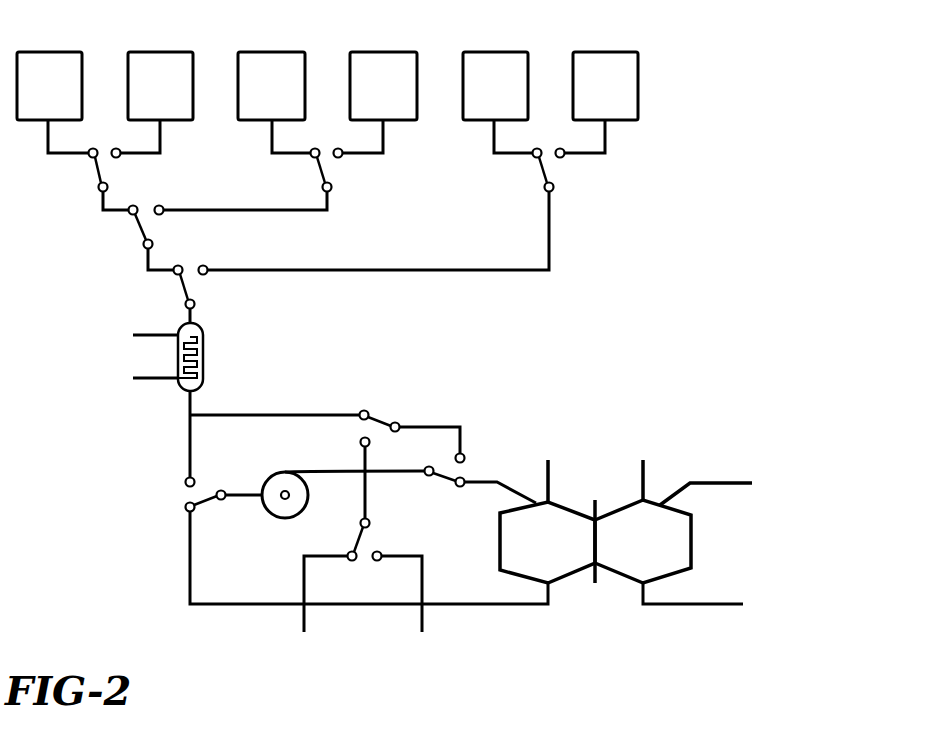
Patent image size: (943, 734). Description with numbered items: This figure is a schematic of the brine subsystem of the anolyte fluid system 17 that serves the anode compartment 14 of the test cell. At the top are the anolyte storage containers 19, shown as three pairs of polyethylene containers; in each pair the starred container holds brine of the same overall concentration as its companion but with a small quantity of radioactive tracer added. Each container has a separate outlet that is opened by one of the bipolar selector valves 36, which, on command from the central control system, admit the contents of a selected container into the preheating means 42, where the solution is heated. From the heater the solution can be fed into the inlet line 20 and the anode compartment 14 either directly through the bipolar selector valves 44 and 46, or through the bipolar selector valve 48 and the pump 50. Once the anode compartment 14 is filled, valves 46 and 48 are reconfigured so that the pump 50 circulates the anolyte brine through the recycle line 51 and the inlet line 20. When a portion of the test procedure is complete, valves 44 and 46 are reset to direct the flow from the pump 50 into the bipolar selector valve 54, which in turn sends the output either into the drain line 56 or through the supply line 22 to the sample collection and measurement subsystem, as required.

The anolyte storage containers 19 is at (160, 52).
The anolyte fluid system 17 is at (447, 46).
The bipolar selector valves 36 is at (98, 173).
The preheating means 42 is at (205, 333).
The bipolar selector valve 44 is at (380, 417).
The bipolar selector valve 46 is at (455, 470).
The bipolar selector valve 48 is at (185, 493).
The pump 50 is at (285, 472).
The bipolar selector valve 54 is at (360, 546).
The drain line 56 is at (302, 575).
The supply line 22 is at (425, 572).
The inlet line 20 is at (513, 485).
The anode compartment 14 is at (565, 505).
The recycle line 51 is at (513, 607).